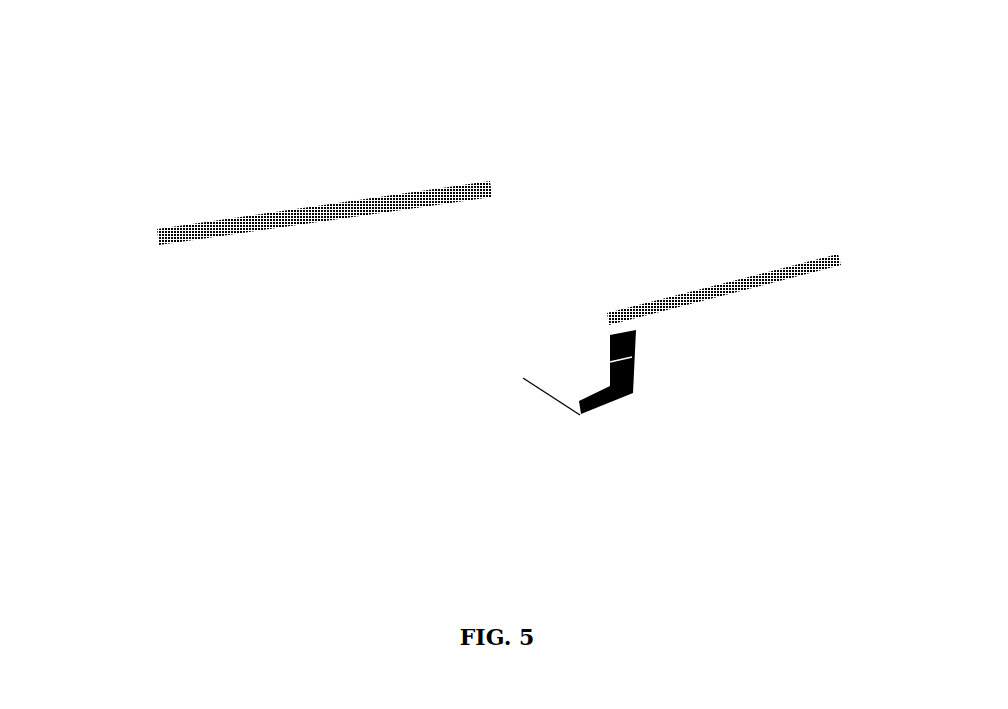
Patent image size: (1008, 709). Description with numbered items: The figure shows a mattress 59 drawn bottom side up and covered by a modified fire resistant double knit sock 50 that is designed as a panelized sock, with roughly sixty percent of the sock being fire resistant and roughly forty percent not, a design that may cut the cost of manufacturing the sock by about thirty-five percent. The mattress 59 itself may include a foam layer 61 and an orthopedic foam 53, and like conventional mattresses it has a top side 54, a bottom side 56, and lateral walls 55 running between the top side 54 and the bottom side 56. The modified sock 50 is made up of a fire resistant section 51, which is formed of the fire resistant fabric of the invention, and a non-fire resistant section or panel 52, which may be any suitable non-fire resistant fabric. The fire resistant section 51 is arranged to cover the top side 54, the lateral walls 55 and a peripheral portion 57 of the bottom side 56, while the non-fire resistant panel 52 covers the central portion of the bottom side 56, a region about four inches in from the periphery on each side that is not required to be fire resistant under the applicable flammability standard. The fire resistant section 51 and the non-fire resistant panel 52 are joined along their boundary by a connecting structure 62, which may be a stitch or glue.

The modified fire resistant double knit sock 50 is at (449, 286).
The fire resistant section 51 is at (333, 202).
The non-fire resistant section or panel 52 is at (590, 237).
The orthopedic foam 53 is at (426, 330).
The top side 54 is at (242, 330).
The lateral walls 55 is at (185, 272).
The bottom side 56 is at (517, 258).
The peripheral portion 57 is at (240, 253).
The mattress 59 is at (340, 132).
The foam layer 61 is at (580, 389).
The connecting structure 62 is at (742, 278).